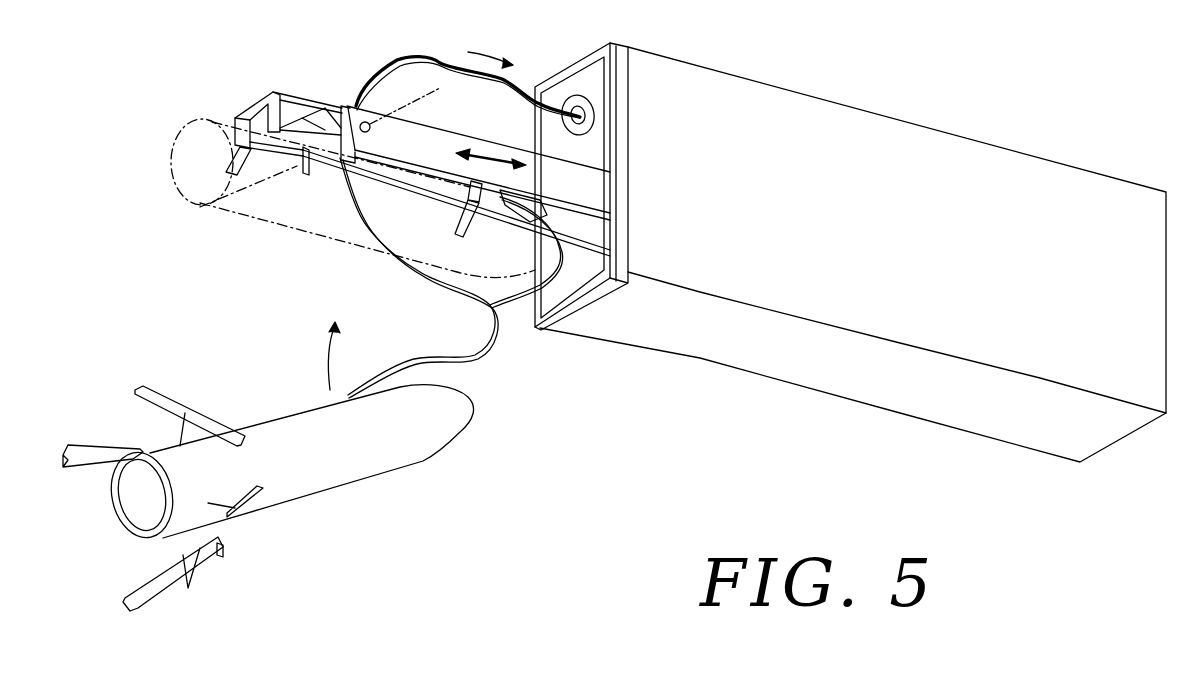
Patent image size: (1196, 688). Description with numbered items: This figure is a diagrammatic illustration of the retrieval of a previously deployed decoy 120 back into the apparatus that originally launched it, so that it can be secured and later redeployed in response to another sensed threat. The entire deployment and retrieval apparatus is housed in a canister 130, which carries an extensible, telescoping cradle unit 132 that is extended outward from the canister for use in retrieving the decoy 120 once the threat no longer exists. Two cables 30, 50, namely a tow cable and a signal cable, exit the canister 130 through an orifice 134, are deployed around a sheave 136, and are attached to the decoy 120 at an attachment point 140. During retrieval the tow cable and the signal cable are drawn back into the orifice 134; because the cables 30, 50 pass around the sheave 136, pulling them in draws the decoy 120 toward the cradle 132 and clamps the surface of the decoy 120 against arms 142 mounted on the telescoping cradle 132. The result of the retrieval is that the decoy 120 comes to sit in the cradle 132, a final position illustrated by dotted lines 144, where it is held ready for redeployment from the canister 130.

The cable 30 is at (512, 85).
The cable 50 is at (536, 92).
The decoy 120 is at (425, 458).
The canister 130 is at (938, 112).
The telescoping cradle unit 132 is at (418, 128).
The orifice 134 is at (598, 112).
The sheave 136 is at (335, 165).
The attachment point 140 is at (348, 390).
The arms 142 is at (230, 170).
The dotted lines 144 is at (191, 206).